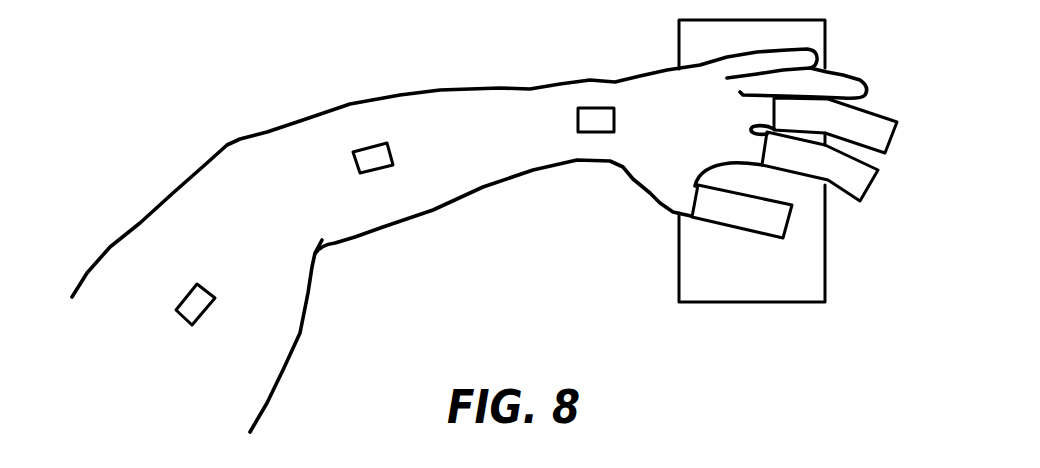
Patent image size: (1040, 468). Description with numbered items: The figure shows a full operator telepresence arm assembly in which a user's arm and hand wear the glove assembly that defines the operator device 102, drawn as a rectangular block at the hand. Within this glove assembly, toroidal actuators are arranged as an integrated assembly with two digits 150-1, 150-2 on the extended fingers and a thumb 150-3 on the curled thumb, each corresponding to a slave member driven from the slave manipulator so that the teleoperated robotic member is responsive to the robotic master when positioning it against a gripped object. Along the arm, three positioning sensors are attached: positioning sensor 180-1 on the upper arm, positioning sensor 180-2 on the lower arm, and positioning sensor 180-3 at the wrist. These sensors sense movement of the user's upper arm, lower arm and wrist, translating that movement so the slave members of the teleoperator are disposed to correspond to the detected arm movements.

The operator device 102 is at (760, 288).
The digit toroidal actuator 150-1 is at (878, 128).
The digit toroidal actuator 150-2 is at (858, 173).
The thumb toroidal actuator 150-3 is at (775, 215).
The positioning sensor 180-1 is at (188, 309).
The positioning sensor 180-2 is at (368, 153).
The positioning sensor 180-3 is at (592, 124).